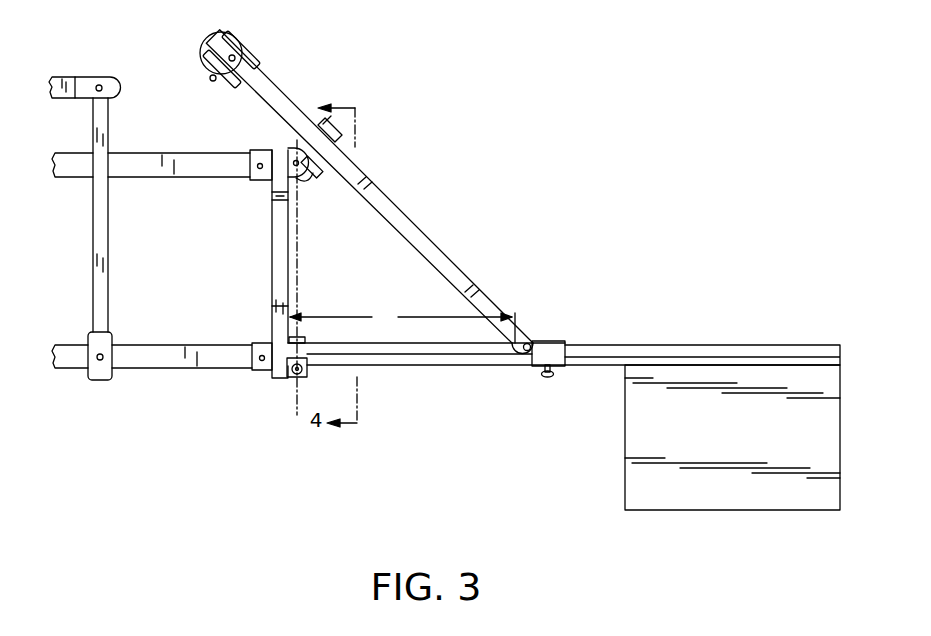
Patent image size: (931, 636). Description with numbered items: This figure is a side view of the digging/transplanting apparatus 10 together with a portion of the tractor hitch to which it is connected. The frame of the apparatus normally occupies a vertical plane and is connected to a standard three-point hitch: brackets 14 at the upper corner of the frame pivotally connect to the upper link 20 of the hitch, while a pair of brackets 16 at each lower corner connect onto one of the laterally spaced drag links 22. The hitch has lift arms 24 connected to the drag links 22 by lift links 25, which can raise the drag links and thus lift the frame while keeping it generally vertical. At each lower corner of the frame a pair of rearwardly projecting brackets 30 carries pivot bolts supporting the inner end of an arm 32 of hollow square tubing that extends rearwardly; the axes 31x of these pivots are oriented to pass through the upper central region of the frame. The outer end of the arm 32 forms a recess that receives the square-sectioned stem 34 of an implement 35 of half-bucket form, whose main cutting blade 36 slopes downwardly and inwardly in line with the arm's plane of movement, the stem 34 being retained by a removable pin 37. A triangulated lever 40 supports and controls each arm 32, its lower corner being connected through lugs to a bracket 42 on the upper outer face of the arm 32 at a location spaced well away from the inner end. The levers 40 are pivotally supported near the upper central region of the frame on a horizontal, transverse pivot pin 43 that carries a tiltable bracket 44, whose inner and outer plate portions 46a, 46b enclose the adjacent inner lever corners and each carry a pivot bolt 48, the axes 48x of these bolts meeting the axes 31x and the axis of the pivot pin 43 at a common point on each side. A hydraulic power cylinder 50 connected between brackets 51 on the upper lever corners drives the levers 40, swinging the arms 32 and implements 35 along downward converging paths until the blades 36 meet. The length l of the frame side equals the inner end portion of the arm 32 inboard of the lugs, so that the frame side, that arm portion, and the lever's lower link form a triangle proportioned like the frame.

The apparatus 10 is at (426, 395).
The brackets 14 is at (262, 181).
The brackets 16 is at (263, 371).
The upper link 20 is at (181, 153).
The drag links 22 is at (135, 363).
The lift arms 24 is at (85, 77).
The lift links 25 is at (92, 243).
The brackets 30 is at (292, 379).
The axes of the pivots 31x is at (299, 230).
The arm 32 is at (404, 366).
The stem 34 is at (598, 345).
The digging/transplanting implements 35 is at (732, 406).
The main cutting blade 36 is at (741, 510).
The removable pin 37 is at (548, 376).
The levers 40 is at (414, 219).
The bracket 42 is at (281, 202).
The pivot pin 43 is at (292, 153).
The tiltable bracket 44 is at (311, 176).
The inner plate portion 46a is at (318, 166).
The outer plate portion 46b is at (336, 136).
The pivot bolt 48 is at (322, 122).
The axes of the pivots 48x is at (355, 108).
The hydraulic power cylinder 50 is at (222, 32).
The brackets 51 is at (228, 86).
The length l is at (402, 324).